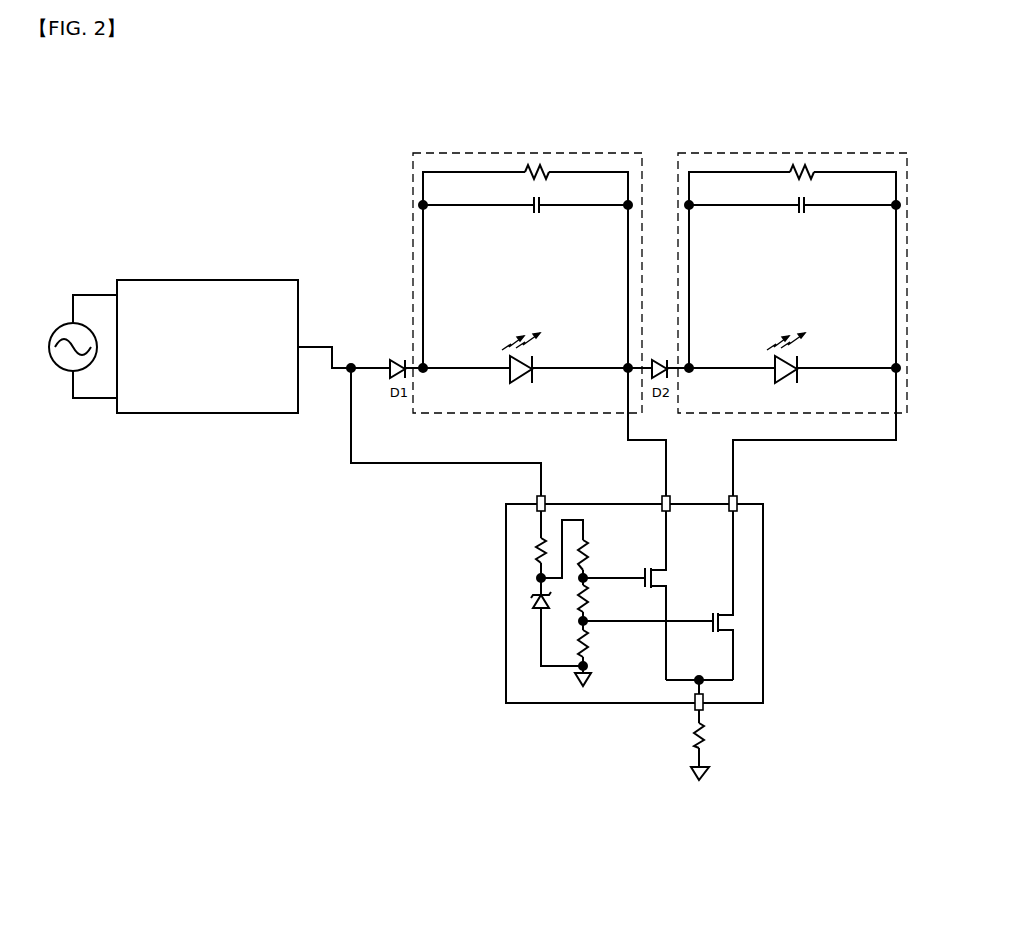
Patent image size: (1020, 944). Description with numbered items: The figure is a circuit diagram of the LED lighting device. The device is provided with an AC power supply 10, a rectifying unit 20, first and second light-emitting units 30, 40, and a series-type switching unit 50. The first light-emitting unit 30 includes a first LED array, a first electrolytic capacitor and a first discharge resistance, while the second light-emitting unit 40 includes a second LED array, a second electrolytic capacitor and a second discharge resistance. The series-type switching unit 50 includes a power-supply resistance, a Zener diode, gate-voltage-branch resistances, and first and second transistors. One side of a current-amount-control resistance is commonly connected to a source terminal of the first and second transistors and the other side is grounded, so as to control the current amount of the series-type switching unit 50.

The AC power supply 10 is at (65, 323).
The rectifying unit 20 is at (207, 280).
The first light-emitting unit 30 is at (527, 153).
The second light-emitting unit 40 is at (792, 153).
The series-type switching unit 50 is at (763, 552).